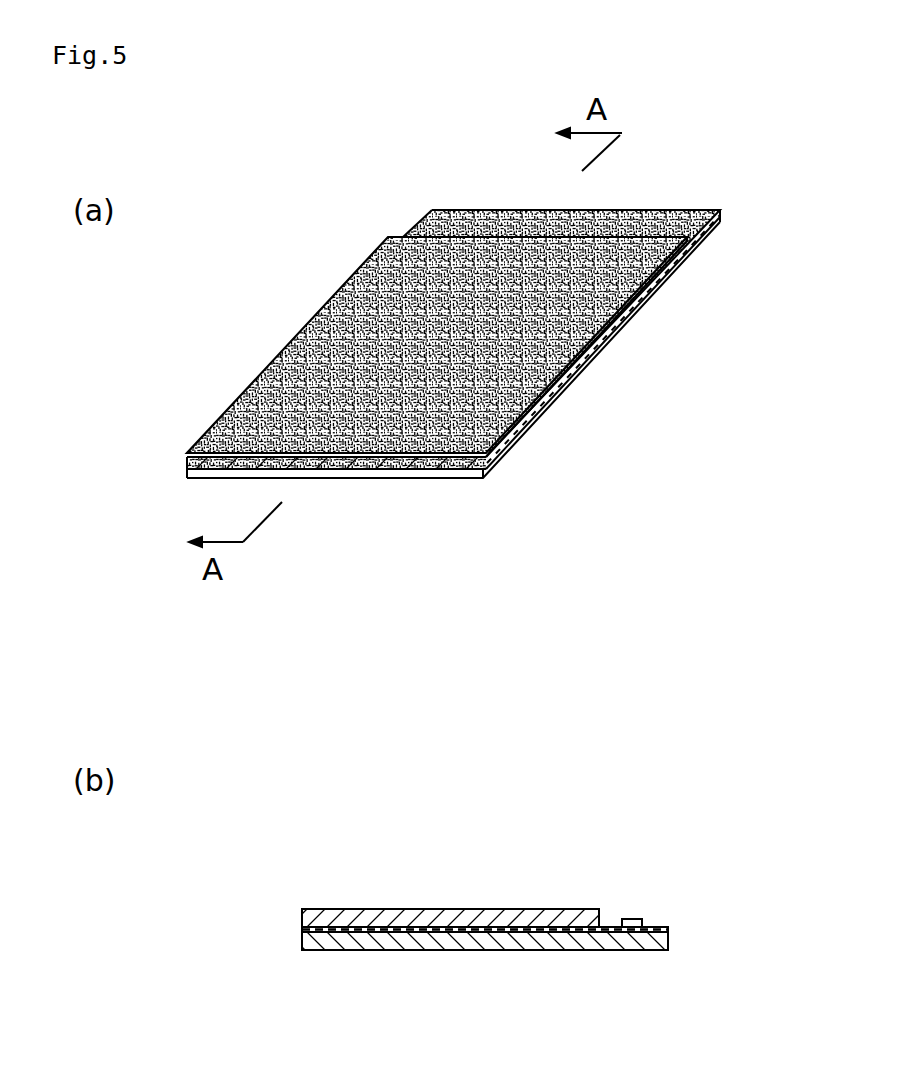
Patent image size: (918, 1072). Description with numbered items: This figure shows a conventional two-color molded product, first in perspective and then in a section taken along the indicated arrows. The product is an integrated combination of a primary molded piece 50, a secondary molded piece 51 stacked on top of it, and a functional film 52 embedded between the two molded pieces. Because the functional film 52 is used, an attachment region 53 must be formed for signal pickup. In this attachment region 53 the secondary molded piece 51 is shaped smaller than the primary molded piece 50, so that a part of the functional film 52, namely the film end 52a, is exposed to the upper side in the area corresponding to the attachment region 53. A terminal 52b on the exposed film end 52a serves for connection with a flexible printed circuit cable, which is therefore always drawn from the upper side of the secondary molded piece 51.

The primary molded piece 50 is at (590, 365).
The secondary molded piece 51 is at (380, 282).
The functional film 52 is at (613, 217).
The film end 52a is at (667, 927).
The terminal 52b is at (634, 919).
The attachment region 53 is at (668, 884).